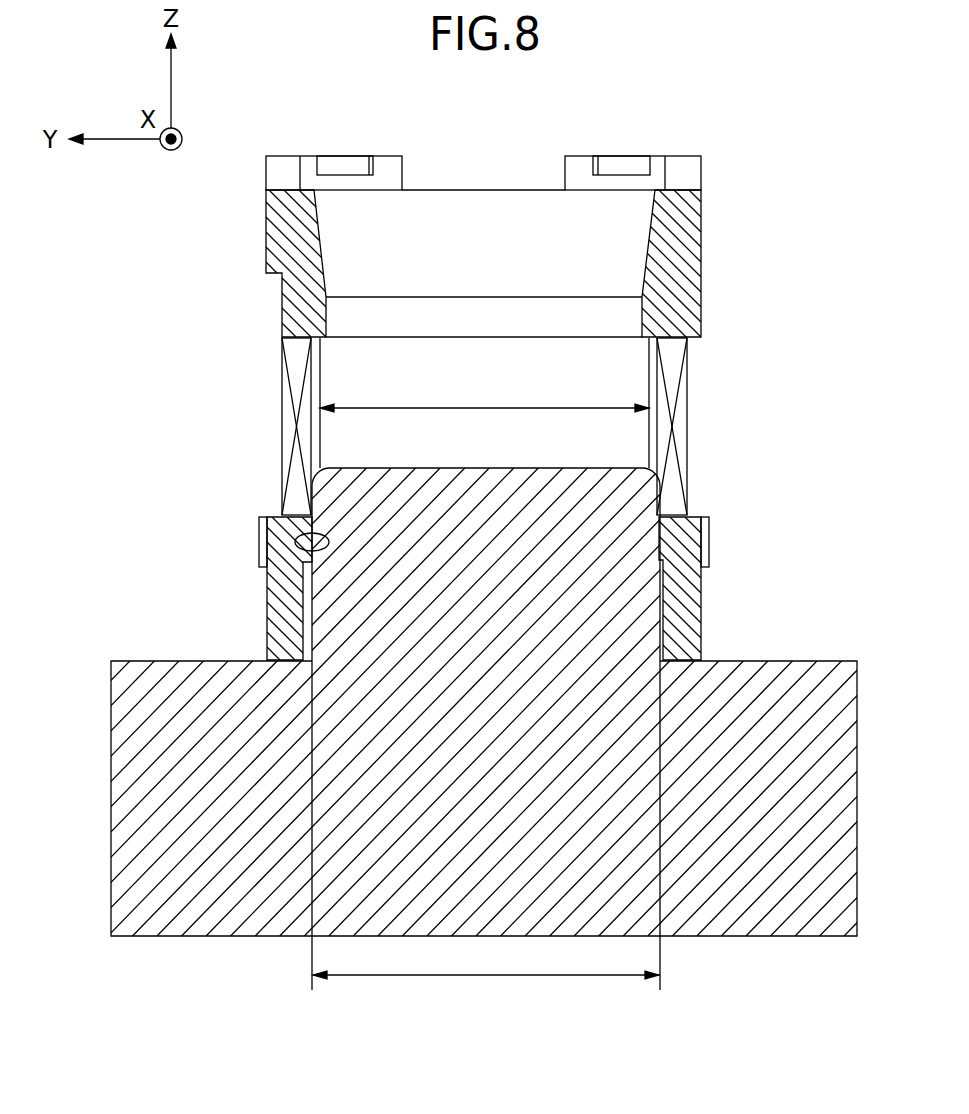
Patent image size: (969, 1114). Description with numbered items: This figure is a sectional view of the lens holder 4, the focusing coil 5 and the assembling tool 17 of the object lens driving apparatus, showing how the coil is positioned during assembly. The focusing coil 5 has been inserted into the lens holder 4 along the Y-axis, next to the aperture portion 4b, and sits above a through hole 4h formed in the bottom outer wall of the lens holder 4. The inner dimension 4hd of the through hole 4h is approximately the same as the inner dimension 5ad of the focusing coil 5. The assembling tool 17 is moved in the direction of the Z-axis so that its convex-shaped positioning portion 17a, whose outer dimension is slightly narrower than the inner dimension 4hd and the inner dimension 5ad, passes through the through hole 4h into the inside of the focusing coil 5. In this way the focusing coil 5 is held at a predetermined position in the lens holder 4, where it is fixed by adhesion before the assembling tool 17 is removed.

The lens holder 4 is at (283, 245).
The aperture portion 4b is at (625, 318).
The through hole 4h is at (296, 545).
The focusing coil 5 is at (687, 408).
The inner dimension of the focusing coil 5ad is at (484, 394).
The inner dimension of the through hole 4hd is at (486, 990).
The assembling tool 17 is at (745, 937).
The positioning portion 17a is at (648, 492).